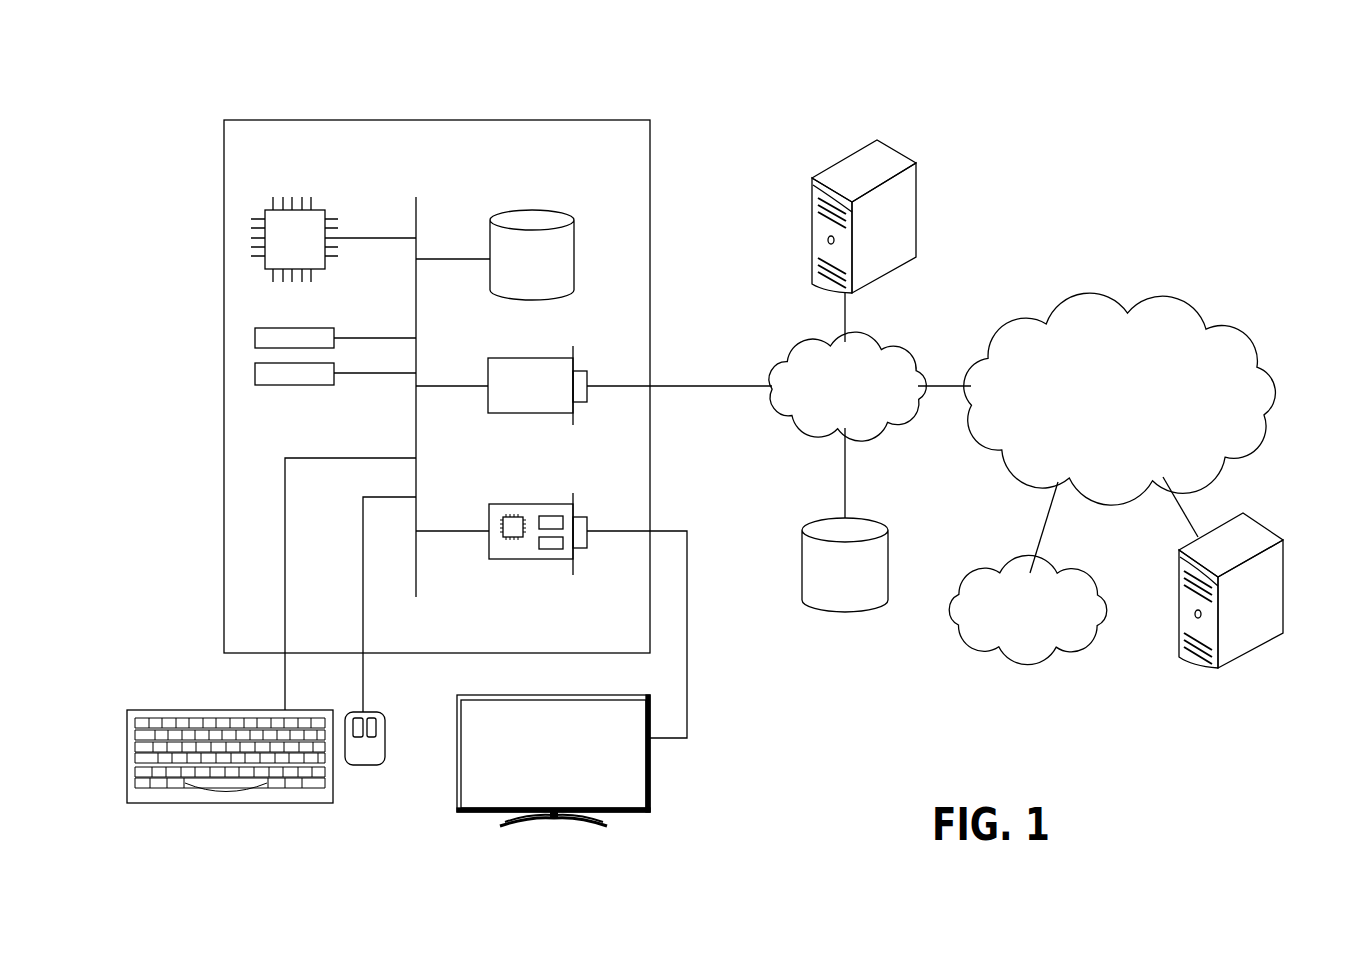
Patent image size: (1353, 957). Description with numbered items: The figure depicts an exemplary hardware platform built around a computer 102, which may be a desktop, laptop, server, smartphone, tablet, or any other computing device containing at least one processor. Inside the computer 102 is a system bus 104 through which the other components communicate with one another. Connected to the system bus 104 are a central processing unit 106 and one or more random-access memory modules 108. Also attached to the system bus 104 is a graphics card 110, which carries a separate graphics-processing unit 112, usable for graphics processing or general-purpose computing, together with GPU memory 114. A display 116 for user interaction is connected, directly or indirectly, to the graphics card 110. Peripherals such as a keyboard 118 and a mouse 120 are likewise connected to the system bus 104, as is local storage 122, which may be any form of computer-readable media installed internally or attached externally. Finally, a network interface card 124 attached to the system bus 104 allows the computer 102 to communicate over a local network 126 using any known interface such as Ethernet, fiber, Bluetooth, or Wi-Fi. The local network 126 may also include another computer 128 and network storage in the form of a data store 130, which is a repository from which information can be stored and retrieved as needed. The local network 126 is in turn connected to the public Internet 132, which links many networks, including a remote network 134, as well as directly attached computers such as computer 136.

The computer 102 is at (603, 118).
The system bus 104 is at (417, 208).
The central processing unit 106 is at (320, 207).
The random-access memory modules 108 is at (335, 368).
The graphics card 110 is at (489, 517).
The graphics-processing unit 112 is at (510, 538).
The GPU memory 114 is at (550, 549).
The display 116 is at (651, 790).
The keyboard 118 is at (232, 803).
The mouse 120 is at (360, 765).
The local storage 122 is at (577, 242).
The network interface card 124 is at (488, 368).
The local network 126 is at (902, 343).
The computer 128 is at (897, 152).
The data store 130 is at (877, 520).
The public Internet 132 is at (1167, 303).
The remote network 134 is at (1083, 565).
The computer 136 is at (1260, 520).